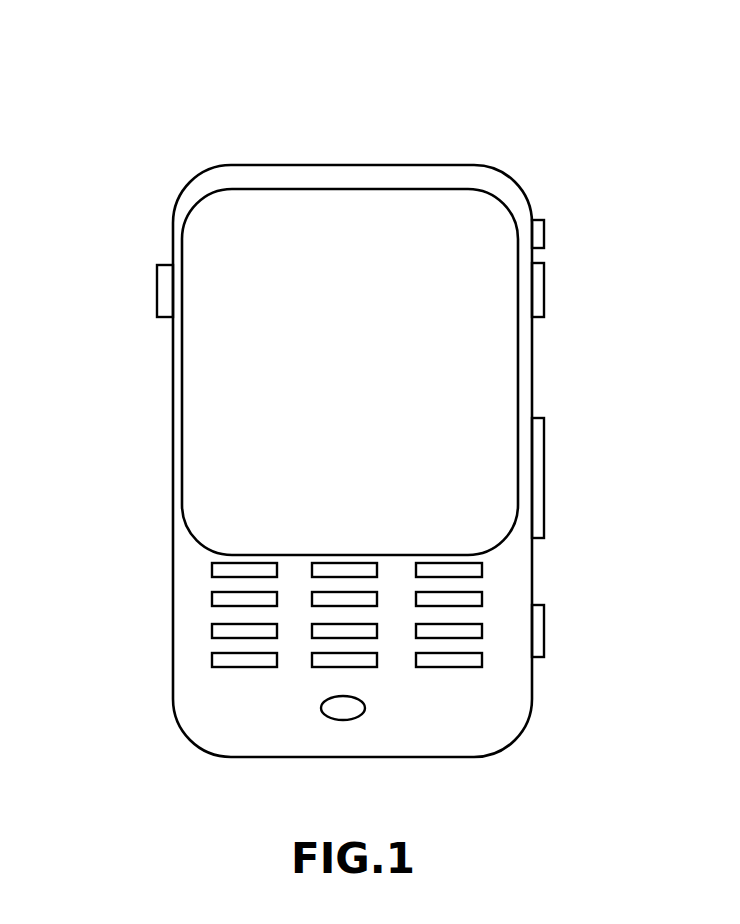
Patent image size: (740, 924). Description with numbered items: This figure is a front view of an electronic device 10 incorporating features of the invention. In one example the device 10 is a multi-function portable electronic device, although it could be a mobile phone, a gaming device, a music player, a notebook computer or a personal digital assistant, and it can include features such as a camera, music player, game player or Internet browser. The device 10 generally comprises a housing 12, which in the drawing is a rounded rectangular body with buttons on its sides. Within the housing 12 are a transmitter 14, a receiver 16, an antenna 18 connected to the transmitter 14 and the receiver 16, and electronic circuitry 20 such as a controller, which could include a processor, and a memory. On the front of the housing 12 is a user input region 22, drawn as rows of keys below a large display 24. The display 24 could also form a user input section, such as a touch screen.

The electronic device 10 is at (158, 86).
The housing 12 is at (512, 181).
The transmitter 14 is at (512, 592).
The receiver 16 is at (502, 695).
The antenna 18 is at (512, 562).
The electronic circuitry 20 is at (490, 725).
The user input region 22 is at (210, 670).
The display 24 is at (207, 382).